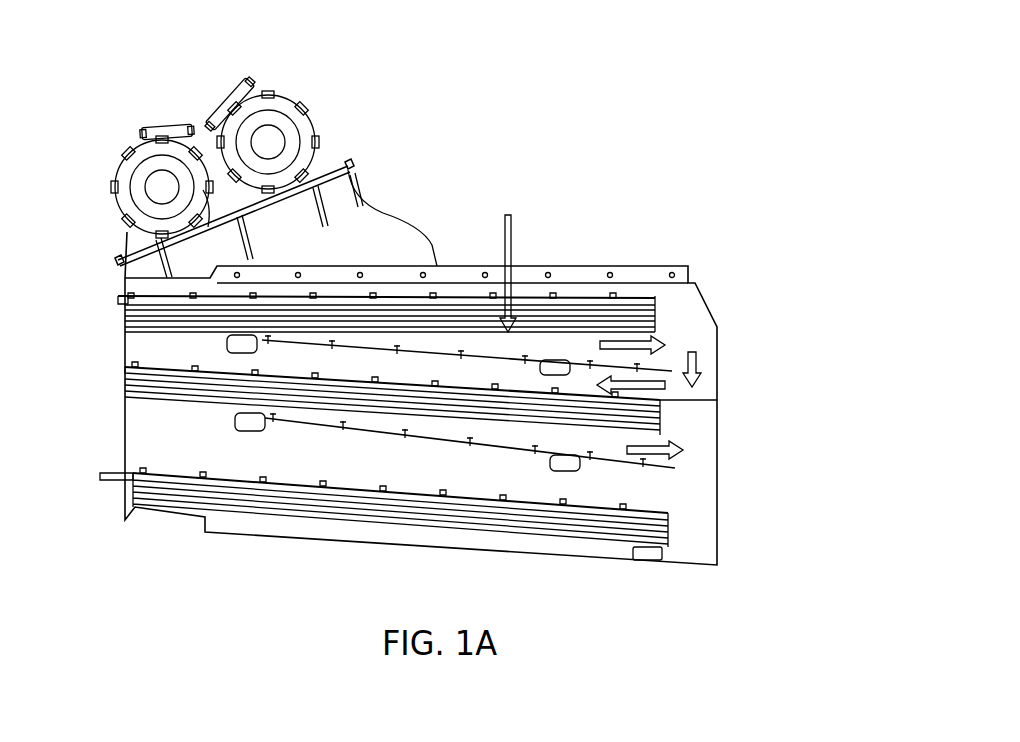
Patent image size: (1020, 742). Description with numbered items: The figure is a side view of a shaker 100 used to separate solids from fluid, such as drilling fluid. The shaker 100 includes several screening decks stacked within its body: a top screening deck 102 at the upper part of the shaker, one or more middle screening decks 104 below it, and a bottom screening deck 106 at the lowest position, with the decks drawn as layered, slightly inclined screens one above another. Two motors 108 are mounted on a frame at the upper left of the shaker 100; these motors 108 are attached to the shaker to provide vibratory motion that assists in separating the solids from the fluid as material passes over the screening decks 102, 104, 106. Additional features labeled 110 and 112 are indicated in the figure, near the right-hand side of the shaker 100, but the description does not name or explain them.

The shaker 100 is at (136, 56).
The top screening deck 102 is at (557, 300).
The middle screening deck 104 is at (660, 432).
The bottom screening deck 106 is at (625, 513).
The motor 108 is at (132, 143).
The material flow path 110 is at (657, 365).
The material flow path 112 is at (625, 462).